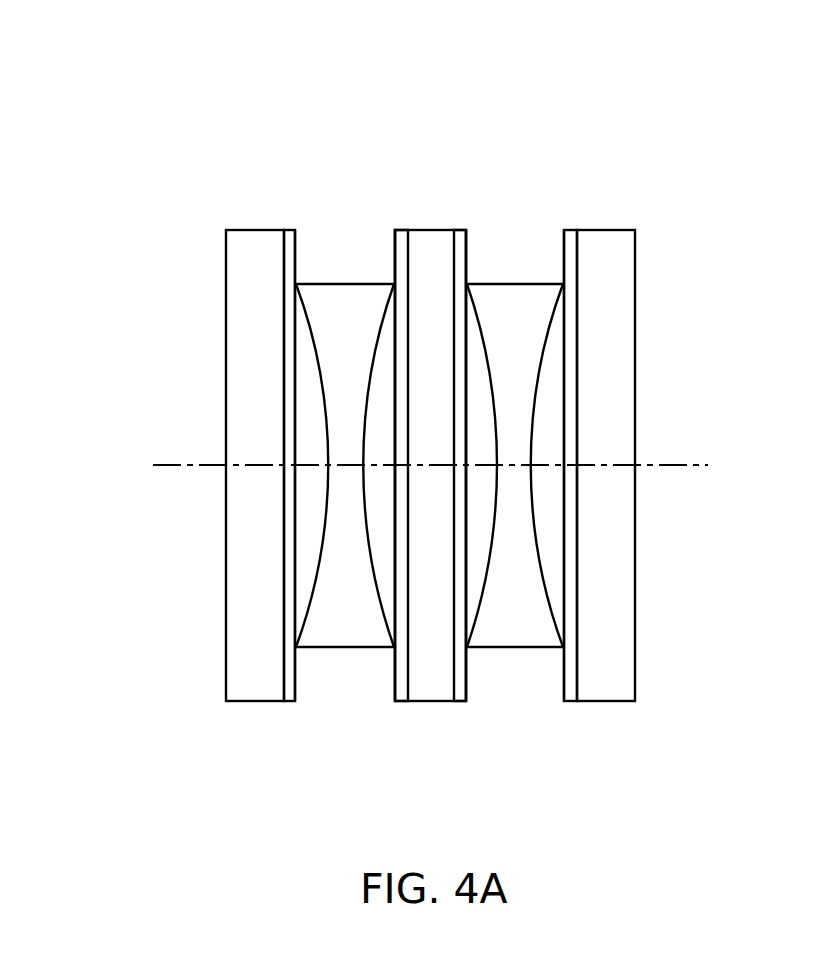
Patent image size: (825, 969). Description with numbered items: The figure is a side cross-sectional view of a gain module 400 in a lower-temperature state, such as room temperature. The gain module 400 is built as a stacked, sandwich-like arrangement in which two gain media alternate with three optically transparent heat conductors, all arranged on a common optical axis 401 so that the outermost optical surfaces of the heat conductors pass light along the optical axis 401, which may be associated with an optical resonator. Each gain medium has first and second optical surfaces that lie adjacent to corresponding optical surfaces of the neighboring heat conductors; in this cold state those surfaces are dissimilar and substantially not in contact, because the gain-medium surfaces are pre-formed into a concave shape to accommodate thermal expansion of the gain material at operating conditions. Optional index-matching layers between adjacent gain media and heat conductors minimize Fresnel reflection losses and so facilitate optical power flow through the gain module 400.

The gain module 400 is at (434, 442).
The optical axis 401 is at (172, 465).